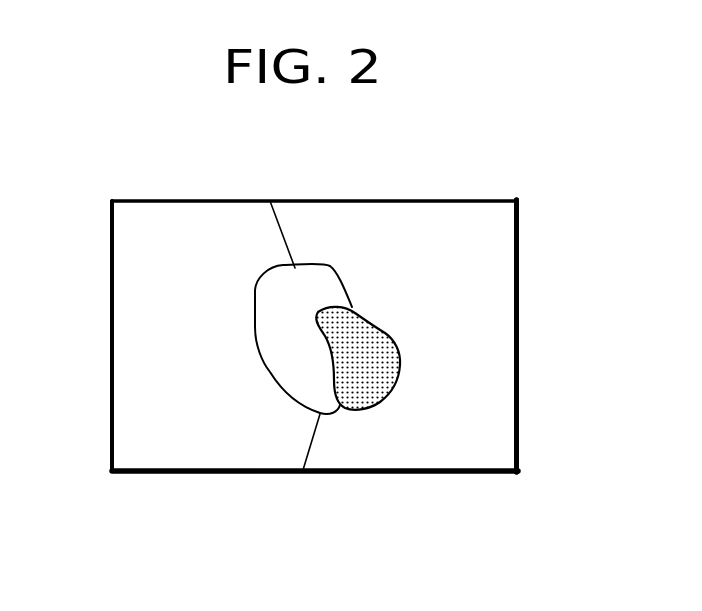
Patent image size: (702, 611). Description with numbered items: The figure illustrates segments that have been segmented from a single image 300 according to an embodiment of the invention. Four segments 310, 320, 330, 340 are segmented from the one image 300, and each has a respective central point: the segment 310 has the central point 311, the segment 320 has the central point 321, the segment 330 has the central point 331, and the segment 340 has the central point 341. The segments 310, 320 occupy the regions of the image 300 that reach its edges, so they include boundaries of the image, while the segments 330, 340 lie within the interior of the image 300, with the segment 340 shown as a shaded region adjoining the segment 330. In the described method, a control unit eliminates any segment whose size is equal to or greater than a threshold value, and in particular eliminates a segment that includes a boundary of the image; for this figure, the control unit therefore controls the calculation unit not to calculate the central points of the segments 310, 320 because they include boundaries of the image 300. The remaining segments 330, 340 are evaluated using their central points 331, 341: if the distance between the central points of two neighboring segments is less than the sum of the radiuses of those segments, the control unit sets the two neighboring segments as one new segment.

The image 300 is at (238, 200).
The segment 310 is at (173, 217).
The central point 311 is at (200, 309).
The segment 320 is at (463, 212).
The central point 321 is at (432, 280).
The segment 330 is at (335, 280).
The central point 331 is at (293, 328).
The segment 340 is at (377, 385).
The central point 341 is at (363, 355).